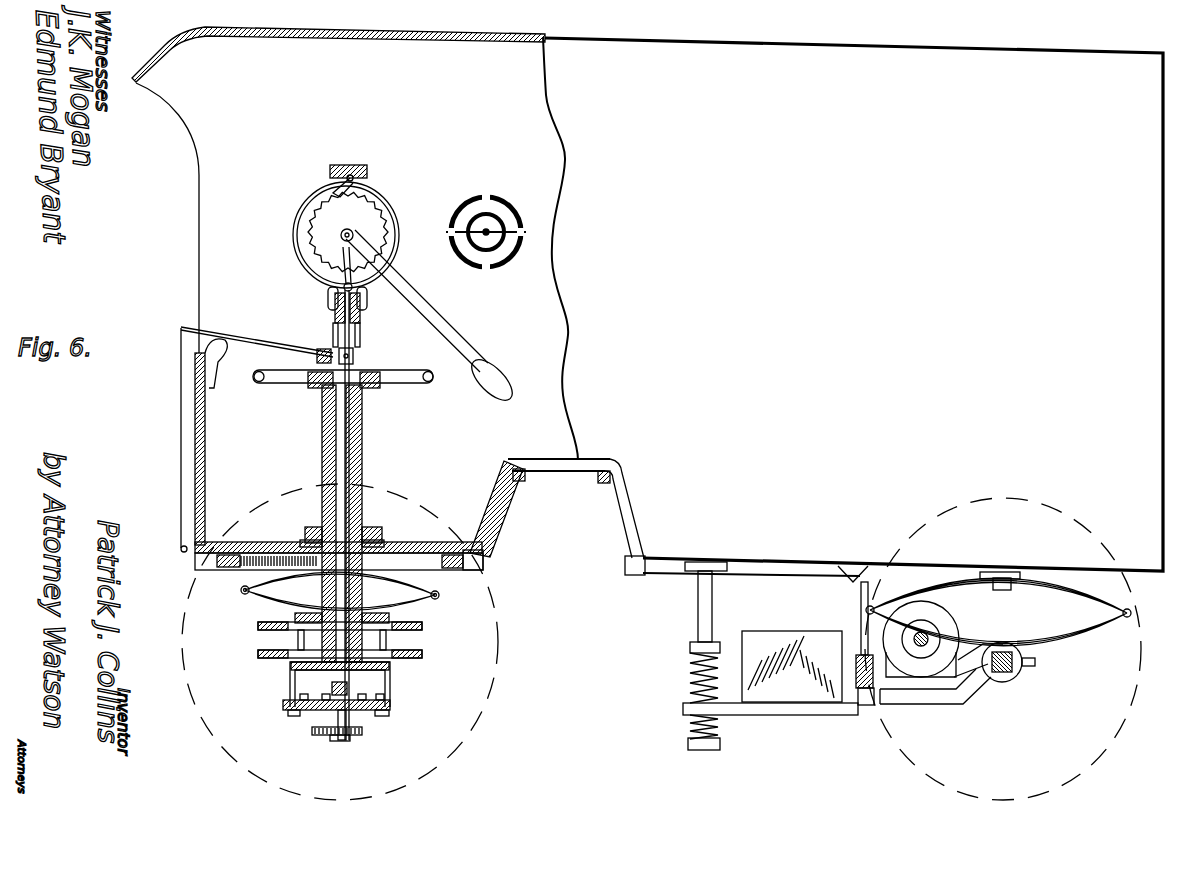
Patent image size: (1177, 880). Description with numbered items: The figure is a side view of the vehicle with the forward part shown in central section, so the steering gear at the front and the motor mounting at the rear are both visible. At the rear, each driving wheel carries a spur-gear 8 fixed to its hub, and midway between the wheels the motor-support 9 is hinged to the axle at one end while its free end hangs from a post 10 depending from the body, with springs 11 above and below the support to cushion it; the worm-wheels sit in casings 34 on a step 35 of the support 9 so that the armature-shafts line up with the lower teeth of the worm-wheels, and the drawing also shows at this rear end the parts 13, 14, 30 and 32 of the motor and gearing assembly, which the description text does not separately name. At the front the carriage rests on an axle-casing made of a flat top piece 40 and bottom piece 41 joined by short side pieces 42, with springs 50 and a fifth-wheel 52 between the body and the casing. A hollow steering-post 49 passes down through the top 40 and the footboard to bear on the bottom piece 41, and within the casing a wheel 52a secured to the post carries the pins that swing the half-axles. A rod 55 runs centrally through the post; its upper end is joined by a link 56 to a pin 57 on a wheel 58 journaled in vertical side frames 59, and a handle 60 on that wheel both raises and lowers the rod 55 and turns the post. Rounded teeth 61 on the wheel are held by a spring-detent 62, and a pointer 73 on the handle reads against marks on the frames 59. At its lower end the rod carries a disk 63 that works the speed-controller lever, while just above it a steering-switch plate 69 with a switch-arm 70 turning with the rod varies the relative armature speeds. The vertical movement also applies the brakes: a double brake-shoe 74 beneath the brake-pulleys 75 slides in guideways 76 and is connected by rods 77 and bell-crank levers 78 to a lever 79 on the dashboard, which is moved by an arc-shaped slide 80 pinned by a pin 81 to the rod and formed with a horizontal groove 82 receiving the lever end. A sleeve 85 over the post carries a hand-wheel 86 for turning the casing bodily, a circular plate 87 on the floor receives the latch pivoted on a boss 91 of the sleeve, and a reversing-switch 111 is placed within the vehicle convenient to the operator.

The spur-gear 8 is at (792, 666).
The motor-support 9 is at (790, 716).
The post 10 is at (714, 612).
The springs 11 is at (690, 680).
The axle 13 is at (1012, 675).
The axle bearing 14 is at (996, 683).
The bracket 30 is at (902, 708).
The hub 32 is at (930, 645).
The casings 34 is at (935, 590).
The step 35 is at (946, 697).
The top piece 40 is at (388, 623).
The bottom piece 41 is at (391, 680).
The side pieces 42 is at (388, 651).
The hollow steering-post 49 is at (363, 447).
The springs 50 is at (440, 596).
The fifth-wheel 52 is at (228, 572).
The wheel 52a is at (422, 628).
The rod 55 is at (346, 476).
The link 56 is at (325, 268).
The pin 57 is at (342, 248).
The wheel 58 is at (348, 231).
The vertical side frames 59 is at (397, 224).
The handle 60 is at (432, 322).
The rounded teeth 61 is at (368, 203).
The spring-detent 62 is at (330, 182).
The disk 63 is at (364, 732).
The plate 69 is at (392, 707).
The switch-arm 70 is at (348, 690).
The pointer 73 is at (388, 272).
The double brake-shoe 74 is at (858, 706).
The brake-pulleys 75 is at (856, 678).
The guideways 76 is at (865, 706).
The rods 77 is at (619, 522).
The bell-crank levers 78 is at (186, 556).
The lever 79 is at (275, 345).
The arc-shaped slide 80 is at (322, 350).
The pin 81 is at (355, 358).
The horizontal groove 82 is at (317, 356).
The sleeve 85 is at (364, 509).
The hand-wheel 86 is at (406, 385).
The circular plate 87 is at (384, 540).
The boss 91 is at (372, 528).
The reversing-switch 111 is at (494, 212).